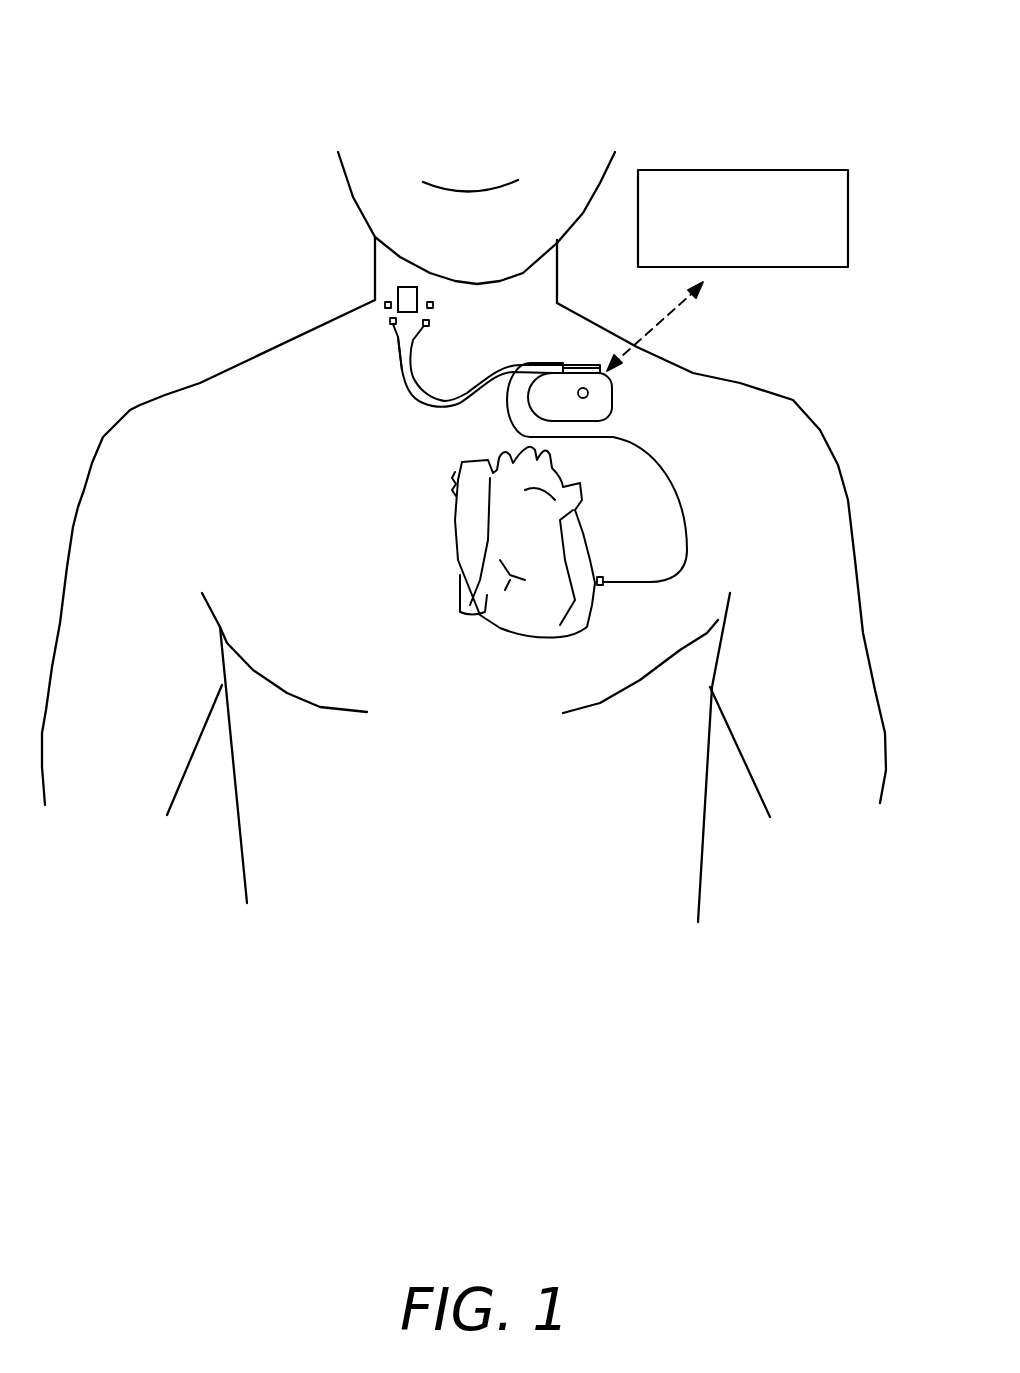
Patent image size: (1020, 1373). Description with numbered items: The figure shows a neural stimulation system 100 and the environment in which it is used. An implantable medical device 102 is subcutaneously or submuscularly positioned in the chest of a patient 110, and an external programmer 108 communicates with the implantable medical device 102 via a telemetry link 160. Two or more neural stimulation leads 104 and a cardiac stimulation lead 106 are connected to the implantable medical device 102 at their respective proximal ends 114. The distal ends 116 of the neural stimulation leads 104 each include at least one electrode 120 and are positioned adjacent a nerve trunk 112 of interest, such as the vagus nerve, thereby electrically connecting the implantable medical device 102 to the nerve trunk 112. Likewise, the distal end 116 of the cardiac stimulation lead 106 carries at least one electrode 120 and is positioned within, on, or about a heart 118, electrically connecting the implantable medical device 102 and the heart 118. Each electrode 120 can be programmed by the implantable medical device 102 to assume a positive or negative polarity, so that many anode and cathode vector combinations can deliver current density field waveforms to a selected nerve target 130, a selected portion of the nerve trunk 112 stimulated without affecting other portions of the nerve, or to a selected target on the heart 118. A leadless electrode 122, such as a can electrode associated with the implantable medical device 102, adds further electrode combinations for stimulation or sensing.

The neural stimulation system 100 is at (827, 83).
The implantable medical device 102 is at (606, 414).
The neural stimulation leads 104 is at (483, 380).
The cardiac stimulation lead 106 is at (670, 483).
The external programmer 108 is at (818, 170).
The patient 110 is at (132, 408).
The nerve trunk 112 is at (407, 286).
The proximal ends 114 is at (545, 362).
The distal ends 116 is at (398, 353).
The heart 118 is at (588, 522).
The electrode 120 is at (433, 307).
The leadless electrode 122 is at (588, 393).
The nerve target 130 is at (405, 302).
The telemetry link 160 is at (662, 318).